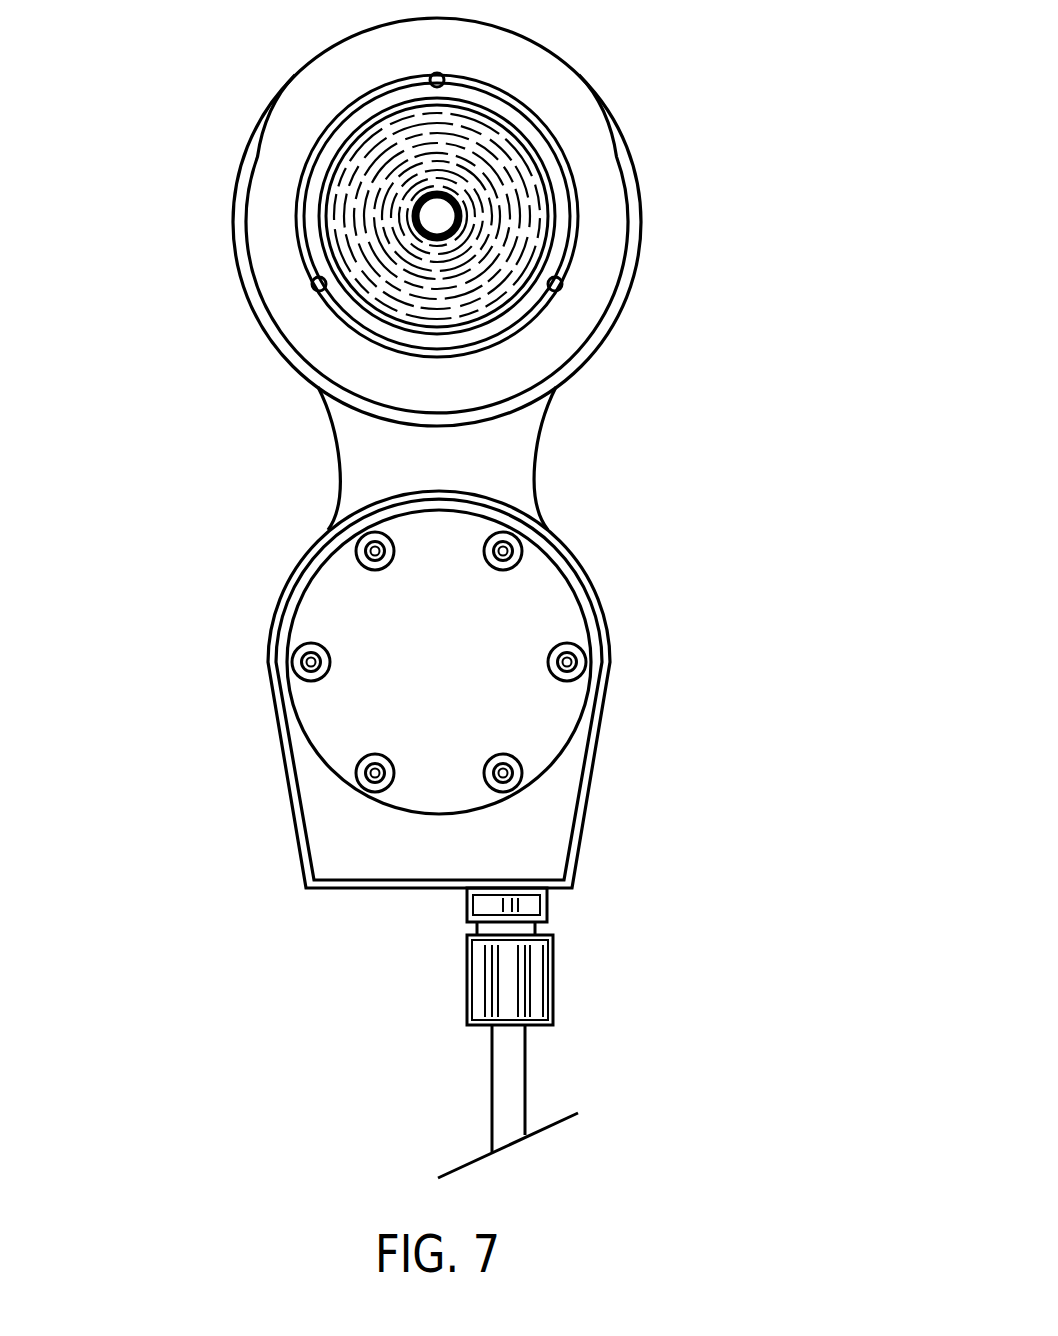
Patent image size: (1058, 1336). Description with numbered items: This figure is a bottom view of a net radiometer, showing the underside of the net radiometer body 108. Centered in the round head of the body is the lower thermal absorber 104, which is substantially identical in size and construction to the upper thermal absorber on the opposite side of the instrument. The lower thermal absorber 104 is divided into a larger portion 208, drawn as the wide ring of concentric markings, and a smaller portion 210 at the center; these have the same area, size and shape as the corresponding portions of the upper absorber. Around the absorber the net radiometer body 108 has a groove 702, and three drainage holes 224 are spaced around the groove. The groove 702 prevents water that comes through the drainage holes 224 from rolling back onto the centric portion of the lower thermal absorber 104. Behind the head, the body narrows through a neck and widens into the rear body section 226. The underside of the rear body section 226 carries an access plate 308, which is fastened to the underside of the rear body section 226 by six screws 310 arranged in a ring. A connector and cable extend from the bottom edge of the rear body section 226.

The lower thermal absorber 104 is at (347, 133).
The net radiometer body 108 is at (236, 173).
The larger portion 208 is at (360, 303).
The smaller portion 210 is at (465, 210).
The drainage holes 224 is at (445, 74).
The rear body section 226 is at (288, 732).
The access plate 308 is at (603, 598).
The screws 310 is at (358, 546).
The groove 702 is at (580, 218).